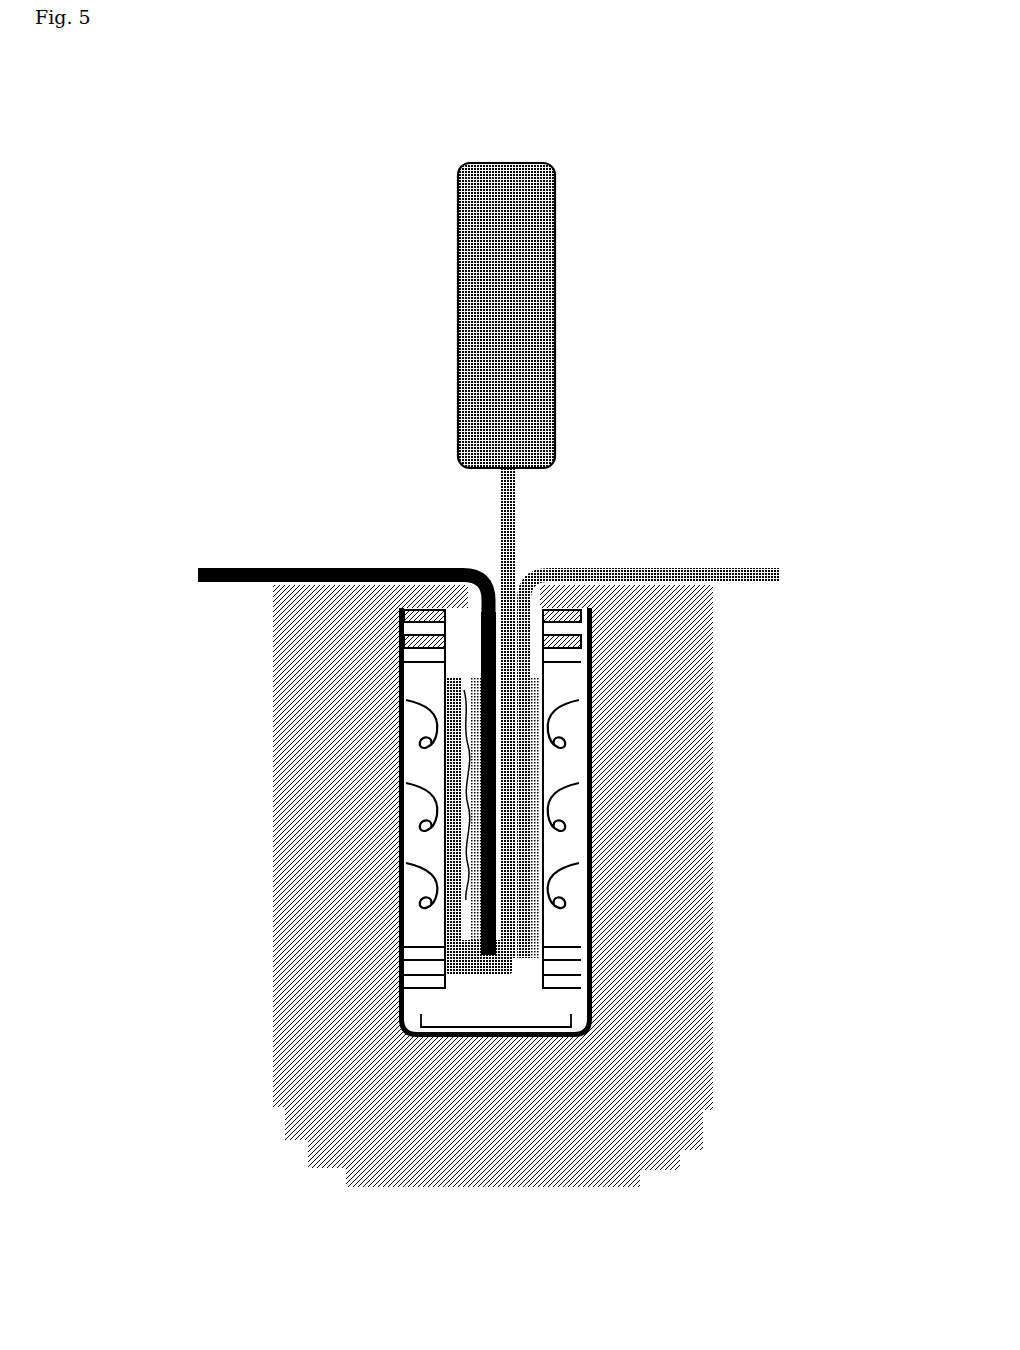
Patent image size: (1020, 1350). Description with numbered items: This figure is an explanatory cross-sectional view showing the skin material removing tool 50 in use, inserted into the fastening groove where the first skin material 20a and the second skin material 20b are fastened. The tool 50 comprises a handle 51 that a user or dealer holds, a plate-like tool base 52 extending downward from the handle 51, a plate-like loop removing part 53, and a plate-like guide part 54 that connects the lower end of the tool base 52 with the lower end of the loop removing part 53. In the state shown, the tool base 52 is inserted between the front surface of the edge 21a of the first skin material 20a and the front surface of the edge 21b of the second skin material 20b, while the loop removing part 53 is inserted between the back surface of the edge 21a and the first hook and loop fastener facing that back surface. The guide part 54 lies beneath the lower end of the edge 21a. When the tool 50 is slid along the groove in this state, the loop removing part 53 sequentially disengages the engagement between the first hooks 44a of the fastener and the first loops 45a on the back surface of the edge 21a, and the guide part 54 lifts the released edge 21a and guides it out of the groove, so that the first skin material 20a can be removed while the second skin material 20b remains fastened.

The skin material removing tool 50 is at (575, 560).
The handle 51 is at (457, 275).
The tool base 52 is at (512, 775).
The loop removing part 53 is at (455, 775).
The guide part 54 is at (483, 976).
The first skin material 20a is at (225, 568).
The second skin material 20b is at (742, 568).
The edge of the first skin material 21a is at (487, 705).
The edge of the second skin material 21b is at (529, 830).
The first hooks 44a is at (432, 872).
The first loops 45a is at (465, 925).